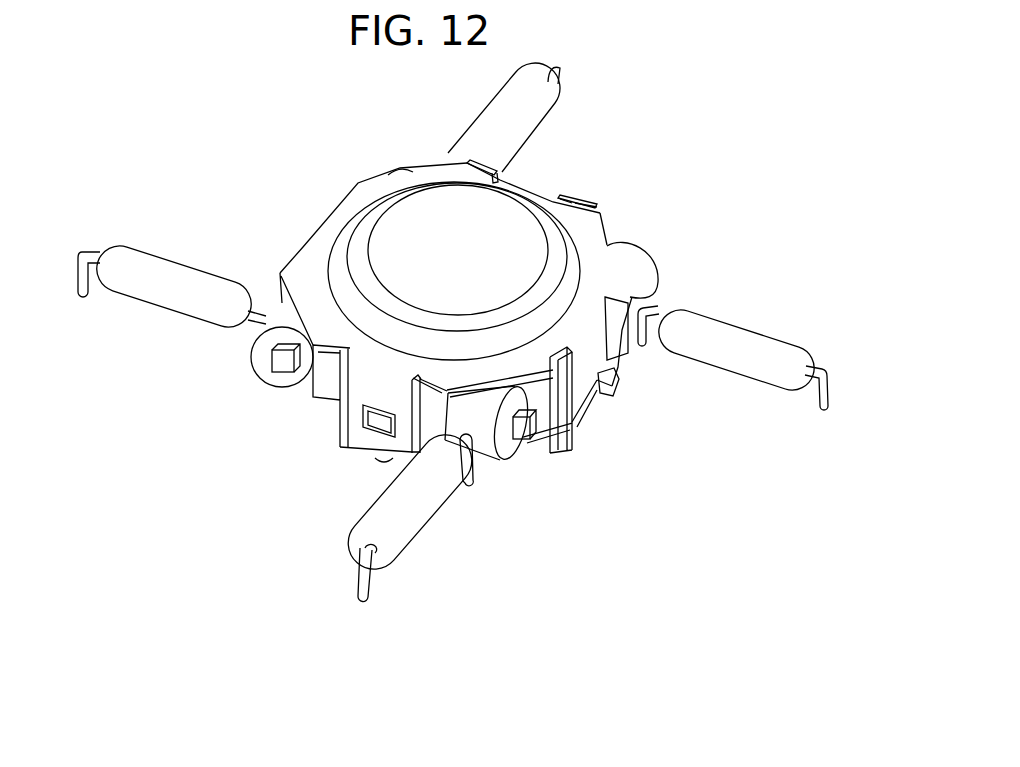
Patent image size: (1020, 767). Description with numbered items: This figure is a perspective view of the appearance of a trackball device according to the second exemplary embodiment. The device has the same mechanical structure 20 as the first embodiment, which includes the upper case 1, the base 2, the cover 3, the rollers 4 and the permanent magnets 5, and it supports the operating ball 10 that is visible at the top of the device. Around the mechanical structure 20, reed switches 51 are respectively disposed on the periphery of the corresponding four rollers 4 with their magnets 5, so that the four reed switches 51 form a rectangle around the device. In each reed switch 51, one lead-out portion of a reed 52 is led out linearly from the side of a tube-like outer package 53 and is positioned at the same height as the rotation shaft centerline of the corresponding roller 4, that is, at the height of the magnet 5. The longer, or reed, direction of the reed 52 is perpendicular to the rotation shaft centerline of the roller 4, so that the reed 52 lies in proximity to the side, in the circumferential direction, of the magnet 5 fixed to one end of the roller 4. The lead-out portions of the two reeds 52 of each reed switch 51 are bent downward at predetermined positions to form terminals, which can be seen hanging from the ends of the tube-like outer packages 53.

The upper case 1 is at (533, 212).
The operating ball 10 is at (452, 200).
The base 2 is at (612, 390).
The cover 3 is at (332, 228).
The mechanical structure 20 is at (607, 212).
The roller 4 is at (277, 370).
The permanent magnet 5 is at (262, 346).
The reed switch 51 is at (453, 370).
The reed 52 is at (415, 530).
The tube-like outer package 53 is at (405, 533).